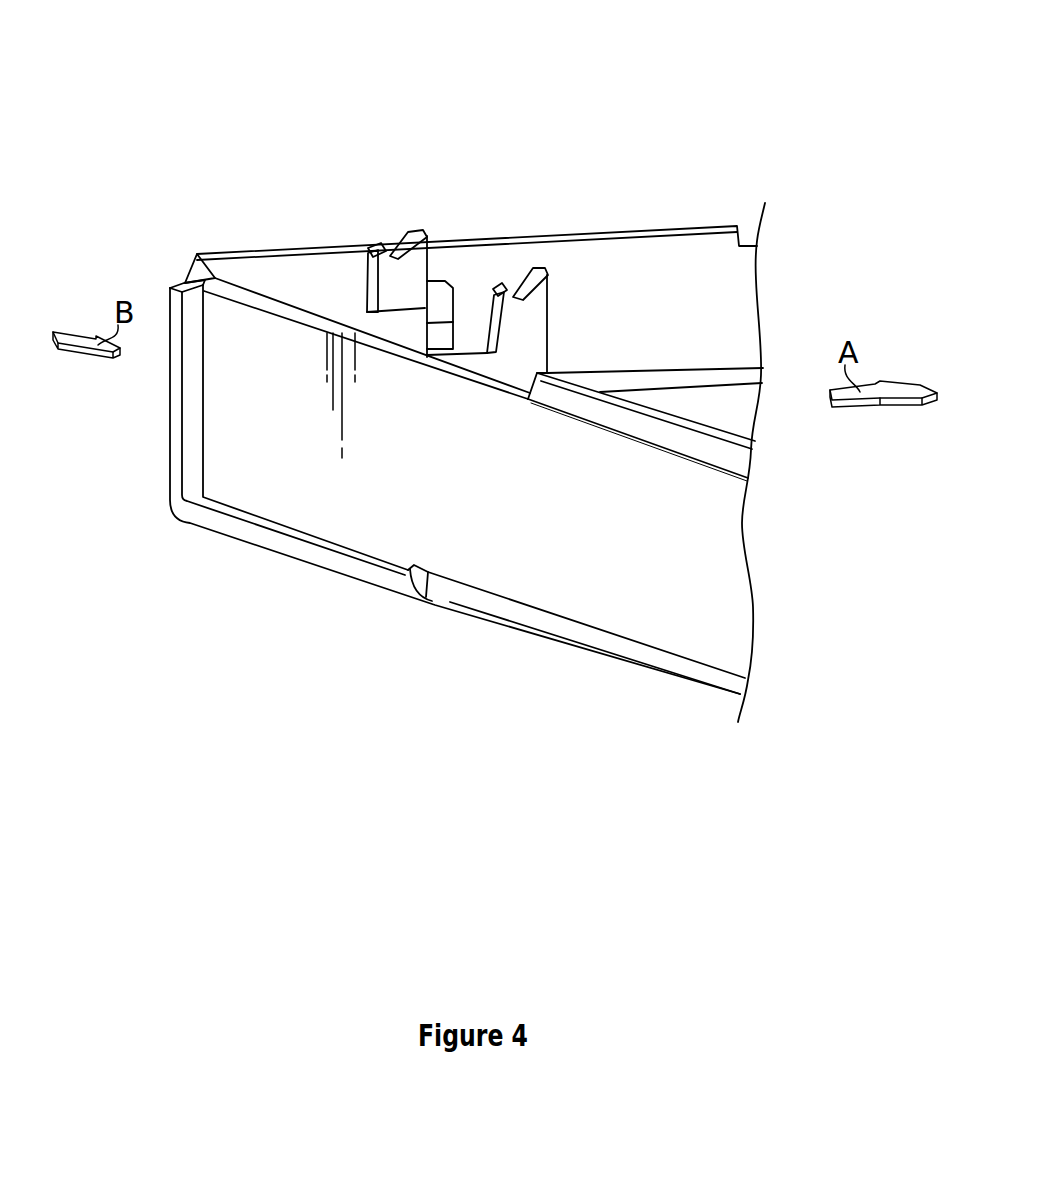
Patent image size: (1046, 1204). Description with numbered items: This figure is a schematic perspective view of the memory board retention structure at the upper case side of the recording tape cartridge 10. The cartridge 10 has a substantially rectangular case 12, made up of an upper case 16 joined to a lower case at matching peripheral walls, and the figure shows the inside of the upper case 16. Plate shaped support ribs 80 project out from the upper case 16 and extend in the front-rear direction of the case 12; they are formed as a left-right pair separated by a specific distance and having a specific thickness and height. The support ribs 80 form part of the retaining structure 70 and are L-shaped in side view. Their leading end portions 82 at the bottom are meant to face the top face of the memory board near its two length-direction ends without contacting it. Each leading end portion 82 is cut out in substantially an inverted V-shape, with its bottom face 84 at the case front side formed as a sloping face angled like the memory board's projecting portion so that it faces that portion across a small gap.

The recording tape cartridge 10 is at (580, 106).
The case 12 is at (294, 552).
The upper case 16 is at (451, 486).
The retaining structure 70 is at (372, 233).
The support ribs 80 is at (432, 262).
The leading end portions 82 is at (429, 234).
The bottom face 84 is at (392, 243).